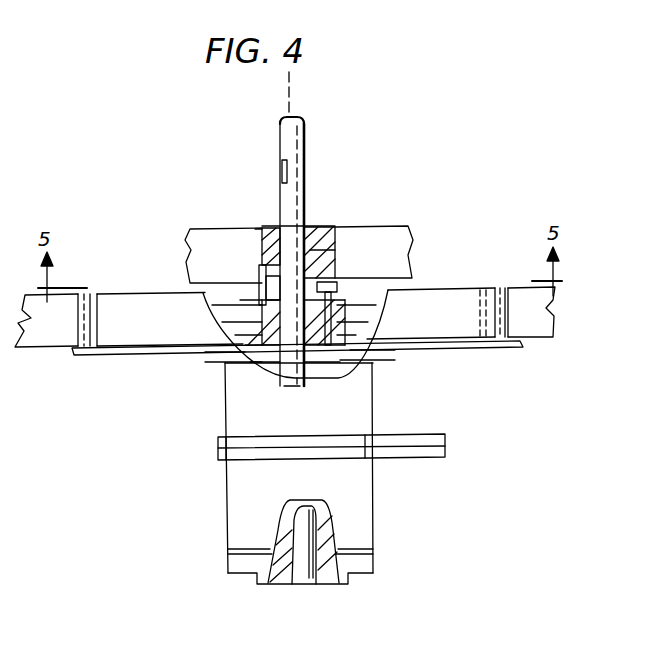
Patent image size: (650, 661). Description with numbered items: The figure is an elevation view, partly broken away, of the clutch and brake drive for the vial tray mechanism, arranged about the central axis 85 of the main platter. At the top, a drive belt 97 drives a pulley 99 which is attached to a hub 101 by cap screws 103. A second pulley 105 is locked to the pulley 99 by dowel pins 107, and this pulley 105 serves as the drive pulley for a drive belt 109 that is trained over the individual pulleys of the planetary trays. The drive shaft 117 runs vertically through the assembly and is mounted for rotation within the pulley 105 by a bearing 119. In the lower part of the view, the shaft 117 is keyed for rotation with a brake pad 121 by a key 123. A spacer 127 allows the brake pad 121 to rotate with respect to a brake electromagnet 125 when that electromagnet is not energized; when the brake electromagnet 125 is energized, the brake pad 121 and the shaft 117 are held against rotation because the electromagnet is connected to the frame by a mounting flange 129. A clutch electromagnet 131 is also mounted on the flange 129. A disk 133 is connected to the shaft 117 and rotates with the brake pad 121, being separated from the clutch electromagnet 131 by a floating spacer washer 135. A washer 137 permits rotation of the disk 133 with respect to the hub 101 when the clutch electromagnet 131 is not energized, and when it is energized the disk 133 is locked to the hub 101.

The central axis 85 is at (291, 80).
The drive shaft 117 is at (303, 147).
The pulley 105 is at (260, 226).
The dowel pins 107 is at (260, 272).
The bearing 119 is at (318, 228).
The drive belt 109 is at (344, 240).
The cap screws 103 is at (342, 262).
The pulley 99 is at (420, 302).
The drive belt 97 is at (518, 303).
The hub 101 is at (245, 328).
The disk 133 is at (237, 360).
The floating spacer washer 135 is at (370, 360).
The clutch electromagnet 131 is at (272, 422).
The washer 137 is at (305, 367).
The mounting flange 129 is at (430, 445).
The brake electromagnet 125 is at (280, 503).
The key 123 is at (313, 500).
The spacer 127 is at (375, 549).
The brake pad 121 is at (366, 558).